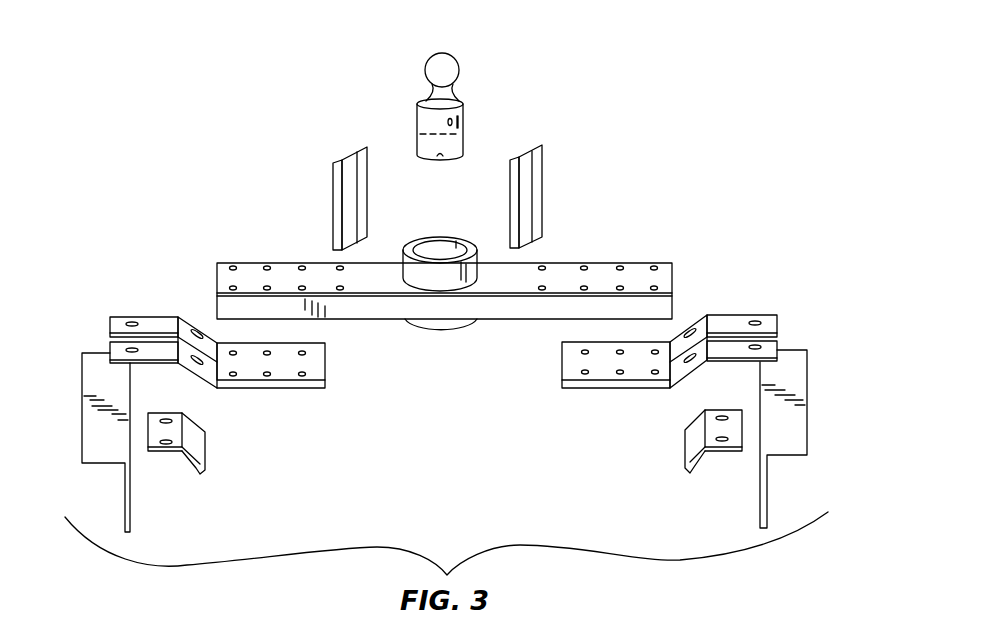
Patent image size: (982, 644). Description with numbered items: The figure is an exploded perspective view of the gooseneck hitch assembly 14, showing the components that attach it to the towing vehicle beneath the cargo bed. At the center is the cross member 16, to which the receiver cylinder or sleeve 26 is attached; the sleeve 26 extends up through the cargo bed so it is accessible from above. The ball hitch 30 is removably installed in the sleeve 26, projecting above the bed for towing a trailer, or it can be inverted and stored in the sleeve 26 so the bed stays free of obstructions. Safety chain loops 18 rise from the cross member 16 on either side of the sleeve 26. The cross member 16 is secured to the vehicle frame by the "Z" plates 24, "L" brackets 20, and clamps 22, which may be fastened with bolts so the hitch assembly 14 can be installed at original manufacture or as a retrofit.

The hitch assembly 14 is at (667, 127).
The cross member 16 is at (663, 277).
The safety chain loops 18 is at (540, 205).
The "L" brackets 20 is at (792, 382).
The clamps 22 is at (682, 443).
The "Z" plates 24 is at (728, 318).
The receiver sleeve 26 is at (405, 244).
The ball hitch 30 is at (418, 97).